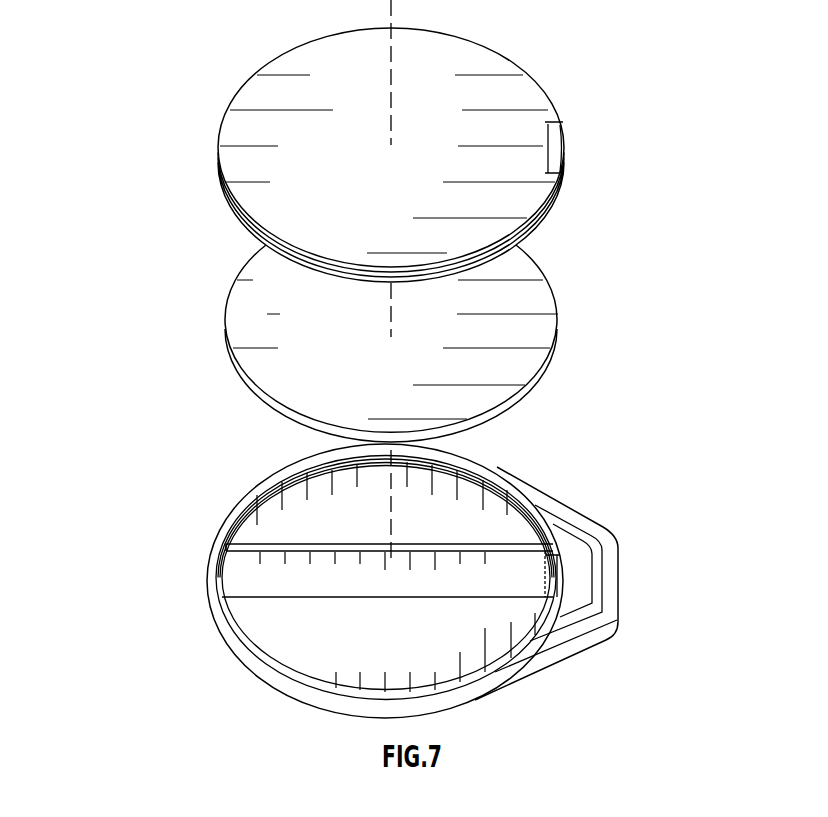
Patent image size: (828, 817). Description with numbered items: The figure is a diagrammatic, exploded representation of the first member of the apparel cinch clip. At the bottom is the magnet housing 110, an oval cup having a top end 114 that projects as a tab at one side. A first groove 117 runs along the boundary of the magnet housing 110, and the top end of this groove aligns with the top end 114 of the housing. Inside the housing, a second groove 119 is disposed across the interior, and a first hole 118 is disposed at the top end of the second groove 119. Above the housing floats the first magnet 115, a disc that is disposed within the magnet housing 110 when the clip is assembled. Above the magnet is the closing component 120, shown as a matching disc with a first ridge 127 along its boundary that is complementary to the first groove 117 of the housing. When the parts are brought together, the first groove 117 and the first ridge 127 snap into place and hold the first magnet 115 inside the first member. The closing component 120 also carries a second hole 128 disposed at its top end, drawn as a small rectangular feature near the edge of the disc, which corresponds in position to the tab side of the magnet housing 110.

The magnet housing 110 is at (394, 548).
The top end 114 is at (547, 527).
The first magnet 115 is at (267, 310).
The first groove 117 is at (470, 467).
The first hole 118 is at (555, 567).
The second groove 119 is at (257, 572).
The closing component 120 is at (372, 155).
The first ridge 127 is at (483, 257).
The second hole 128 is at (562, 150).